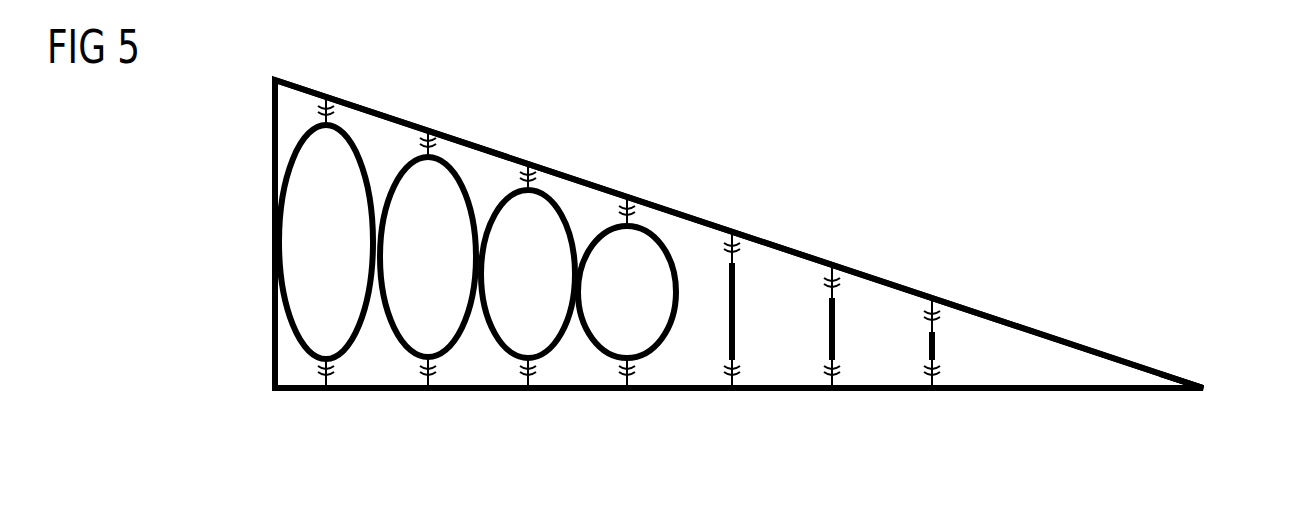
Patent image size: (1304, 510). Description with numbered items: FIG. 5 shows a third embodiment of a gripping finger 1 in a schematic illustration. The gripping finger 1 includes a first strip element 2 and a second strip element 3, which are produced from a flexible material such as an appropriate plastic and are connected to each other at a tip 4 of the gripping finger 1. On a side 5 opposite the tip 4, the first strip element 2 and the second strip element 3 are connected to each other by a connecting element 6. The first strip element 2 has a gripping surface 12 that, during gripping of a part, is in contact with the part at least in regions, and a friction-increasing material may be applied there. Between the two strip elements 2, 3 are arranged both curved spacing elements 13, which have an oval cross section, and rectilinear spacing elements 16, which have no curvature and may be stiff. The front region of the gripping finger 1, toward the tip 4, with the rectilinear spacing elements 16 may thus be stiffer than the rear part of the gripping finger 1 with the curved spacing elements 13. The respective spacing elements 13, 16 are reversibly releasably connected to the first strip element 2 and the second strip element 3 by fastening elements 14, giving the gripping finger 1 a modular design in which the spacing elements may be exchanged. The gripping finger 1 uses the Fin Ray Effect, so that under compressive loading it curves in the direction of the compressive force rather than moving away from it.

The gripping finger 1 is at (620, 131).
The first strip element 2 is at (413, 393).
The second strip element 3 is at (697, 218).
The tip 4 is at (1208, 379).
The side 5 is at (240, 238).
The connecting element 6 is at (274, 305).
The gripping surface 12 is at (670, 399).
The curved spacing elements 13 is at (367, 199).
The fastening elements 14 is at (322, 103).
The rectilinear spacing elements 16 is at (737, 318).